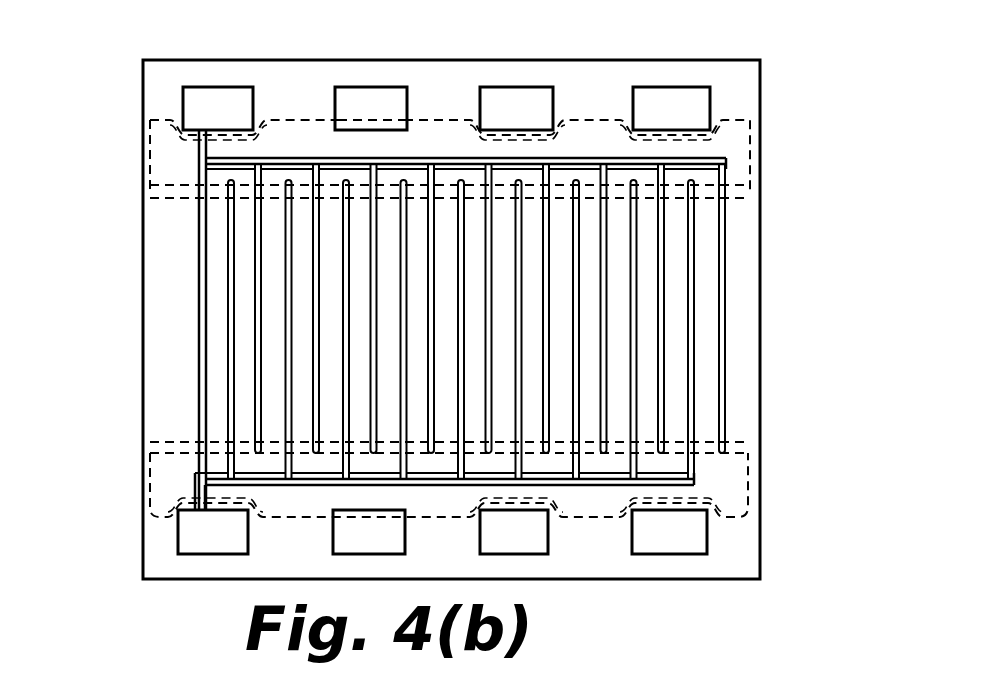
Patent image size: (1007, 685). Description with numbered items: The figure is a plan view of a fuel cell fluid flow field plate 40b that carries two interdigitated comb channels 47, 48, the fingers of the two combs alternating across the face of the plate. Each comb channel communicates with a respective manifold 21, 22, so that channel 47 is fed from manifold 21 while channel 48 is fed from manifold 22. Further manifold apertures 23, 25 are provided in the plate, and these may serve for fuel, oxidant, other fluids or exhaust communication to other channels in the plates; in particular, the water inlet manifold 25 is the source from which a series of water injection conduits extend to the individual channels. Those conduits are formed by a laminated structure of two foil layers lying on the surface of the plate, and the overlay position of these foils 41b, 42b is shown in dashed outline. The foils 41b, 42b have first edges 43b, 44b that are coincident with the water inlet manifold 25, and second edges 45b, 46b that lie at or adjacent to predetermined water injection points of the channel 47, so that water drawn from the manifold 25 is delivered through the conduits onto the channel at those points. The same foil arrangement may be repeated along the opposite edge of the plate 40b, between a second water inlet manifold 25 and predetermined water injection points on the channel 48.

The manifold 21 is at (390, 262).
The manifold 22 is at (440, 323).
The manifold aperture 23 is at (675, 540).
The water inlet manifold 25 is at (366, 97).
The fluid flow field plate 40b is at (742, 418).
The foil 41b is at (757, 160).
The foil 42b is at (760, 187).
The first edge 43b is at (360, 118).
The first edge 44b is at (397, 122).
The second edge 45b is at (592, 184).
The second edge 46b is at (520, 196).
The interdigitated comb channel 47 is at (198, 372).
The interdigitated comb channel 48 is at (229, 403).